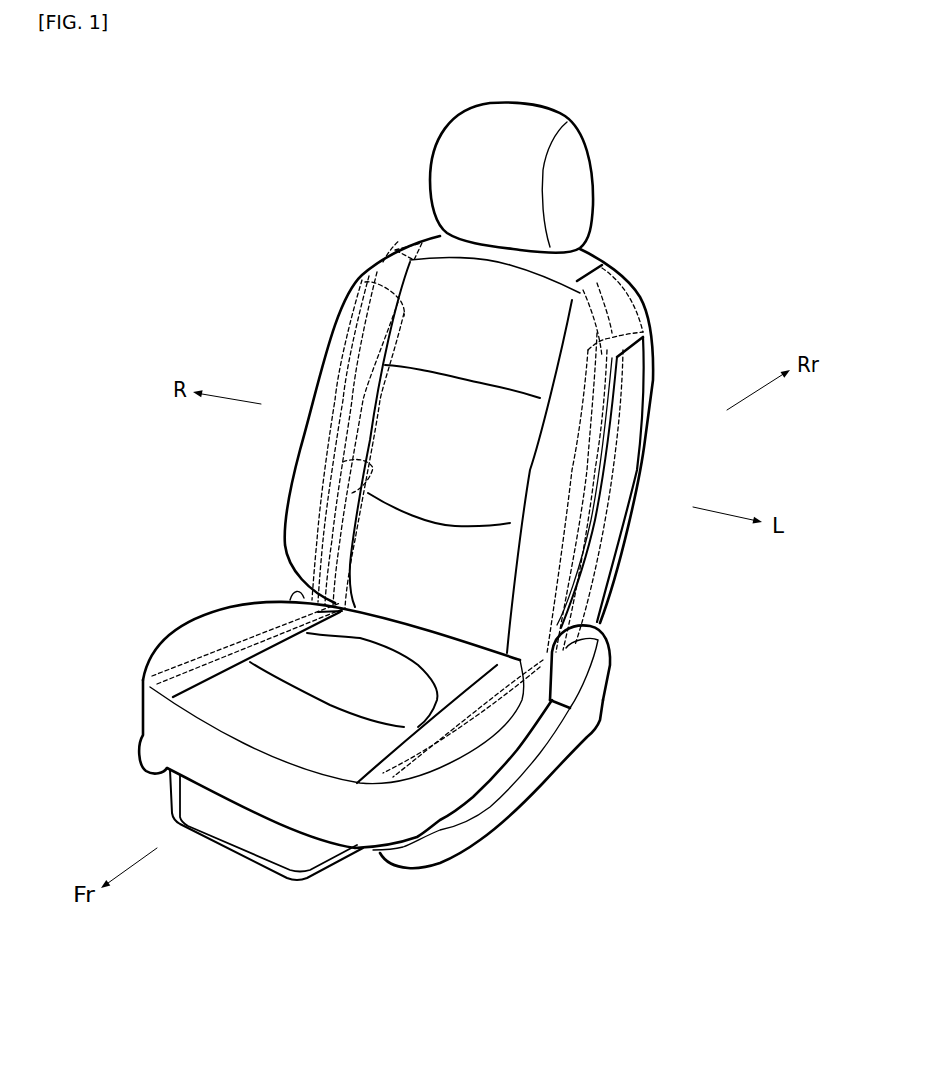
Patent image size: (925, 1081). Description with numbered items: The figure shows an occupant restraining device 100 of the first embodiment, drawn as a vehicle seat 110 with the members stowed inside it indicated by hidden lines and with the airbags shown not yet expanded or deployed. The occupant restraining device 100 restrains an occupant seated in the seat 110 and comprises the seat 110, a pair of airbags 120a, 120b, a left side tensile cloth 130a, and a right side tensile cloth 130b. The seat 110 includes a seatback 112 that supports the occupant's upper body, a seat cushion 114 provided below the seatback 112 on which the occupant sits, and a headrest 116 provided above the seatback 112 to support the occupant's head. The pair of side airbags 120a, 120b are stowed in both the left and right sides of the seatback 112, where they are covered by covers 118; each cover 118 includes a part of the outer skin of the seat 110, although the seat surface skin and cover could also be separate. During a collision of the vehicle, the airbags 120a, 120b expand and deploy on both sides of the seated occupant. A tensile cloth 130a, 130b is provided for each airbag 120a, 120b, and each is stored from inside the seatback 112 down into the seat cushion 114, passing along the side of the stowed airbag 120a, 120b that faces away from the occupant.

The occupant restraining device 100 is at (361, 163).
The seat 110 is at (653, 257).
The seatback 112 is at (642, 394).
The seat cushion 114 is at (348, 823).
The headrest 116 is at (526, 119).
The cover 118 is at (621, 458).
The airbag 120a is at (645, 330).
The airbag 120b is at (362, 279).
The left side tensile cloth 130a is at (640, 293).
The right side tensile cloth 130b is at (407, 252).